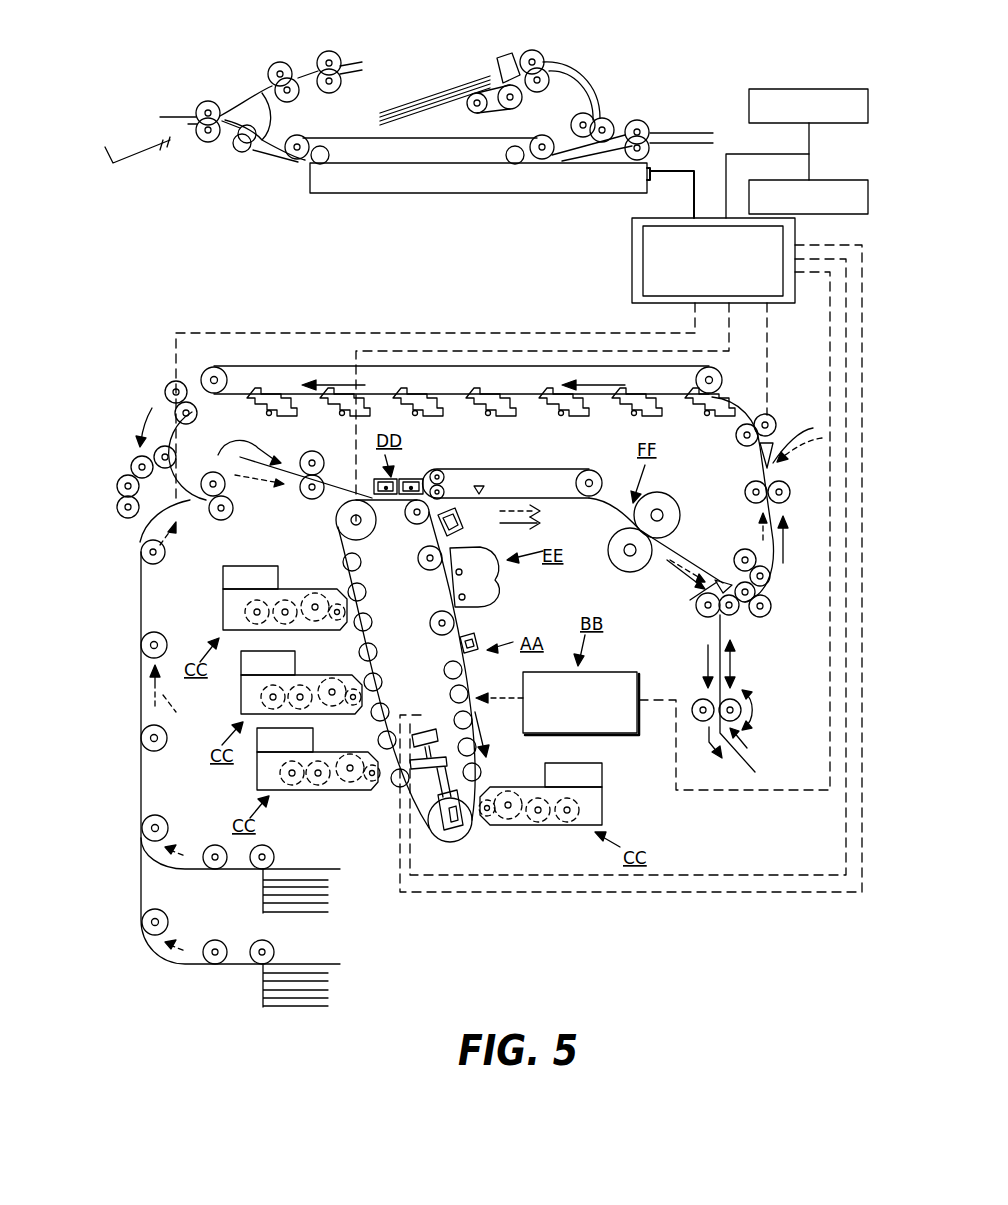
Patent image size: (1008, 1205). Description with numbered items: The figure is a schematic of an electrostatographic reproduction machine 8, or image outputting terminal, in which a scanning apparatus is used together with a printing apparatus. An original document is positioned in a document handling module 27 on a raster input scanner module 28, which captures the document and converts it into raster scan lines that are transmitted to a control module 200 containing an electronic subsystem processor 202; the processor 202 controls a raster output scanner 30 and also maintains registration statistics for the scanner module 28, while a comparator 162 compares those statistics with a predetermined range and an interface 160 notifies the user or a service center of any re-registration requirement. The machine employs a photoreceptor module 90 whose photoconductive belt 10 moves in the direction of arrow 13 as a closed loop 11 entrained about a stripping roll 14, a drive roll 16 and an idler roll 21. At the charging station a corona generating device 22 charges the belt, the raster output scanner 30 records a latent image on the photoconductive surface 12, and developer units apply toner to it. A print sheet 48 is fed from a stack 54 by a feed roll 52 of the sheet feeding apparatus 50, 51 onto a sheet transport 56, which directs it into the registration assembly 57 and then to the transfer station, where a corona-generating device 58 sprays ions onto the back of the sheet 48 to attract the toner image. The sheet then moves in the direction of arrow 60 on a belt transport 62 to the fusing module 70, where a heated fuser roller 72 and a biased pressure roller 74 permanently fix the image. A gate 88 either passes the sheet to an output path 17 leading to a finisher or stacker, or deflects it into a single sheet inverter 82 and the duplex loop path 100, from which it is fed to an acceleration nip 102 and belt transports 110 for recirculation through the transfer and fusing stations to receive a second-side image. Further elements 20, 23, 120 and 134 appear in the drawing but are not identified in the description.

The electrostatographic reproduction machine 8 is at (430, 73).
The document handling module 27 is at (627, 60).
The raster input scanner module 28 is at (426, 194).
The interface 160 is at (808, 88).
The comparator 162 is at (839, 180).
The control module 200 is at (632, 232).
The electronic subsystem processor 202 is at (643, 270).
The duplex loop path 100 is at (496, 326).
The belt transports 110 is at (268, 365).
The acceleration nip 102 is at (170, 391).
The registration assembly 57 is at (318, 461).
The paper path 120 is at (216, 524).
The print sheet 48 is at (240, 758).
The sheet transport 56 is at (142, 802).
The sheet feeding apparatus 50 is at (232, 849).
The sheet feeding apparatus 51 is at (249, 971).
The feed roll 52 is at (266, 845).
The stack 54 is at (326, 866).
The photoreceptor module 90 is at (351, 631).
The photoconductive belt 10 is at (465, 677).
The drive roll 16 is at (336, 522).
The stripping roll 14 is at (412, 524).
The tension roller 20 is at (463, 832).
The photoconductive surface 12 is at (418, 812).
The backup rollers 23 is at (378, 675).
The arrow 13 is at (480, 732).
The closed loop 11 is at (380, 725).
The corona generating device 22 is at (474, 637).
The corona-generating device 58 is at (413, 478).
The belt transport 62 is at (520, 468).
The arrow 60 is at (511, 526).
The idler roll 21 is at (463, 540).
The pressure roller 74 is at (668, 503).
The heated fuser roller 72 is at (620, 573).
The fusing module 70 is at (607, 563).
The output path 17 is at (805, 428).
The gate 88 is at (768, 440).
The inverter rollers 134 is at (698, 606).
The single sheet inverter 82 is at (702, 624).
The raster output scanner 30 is at (618, 735).